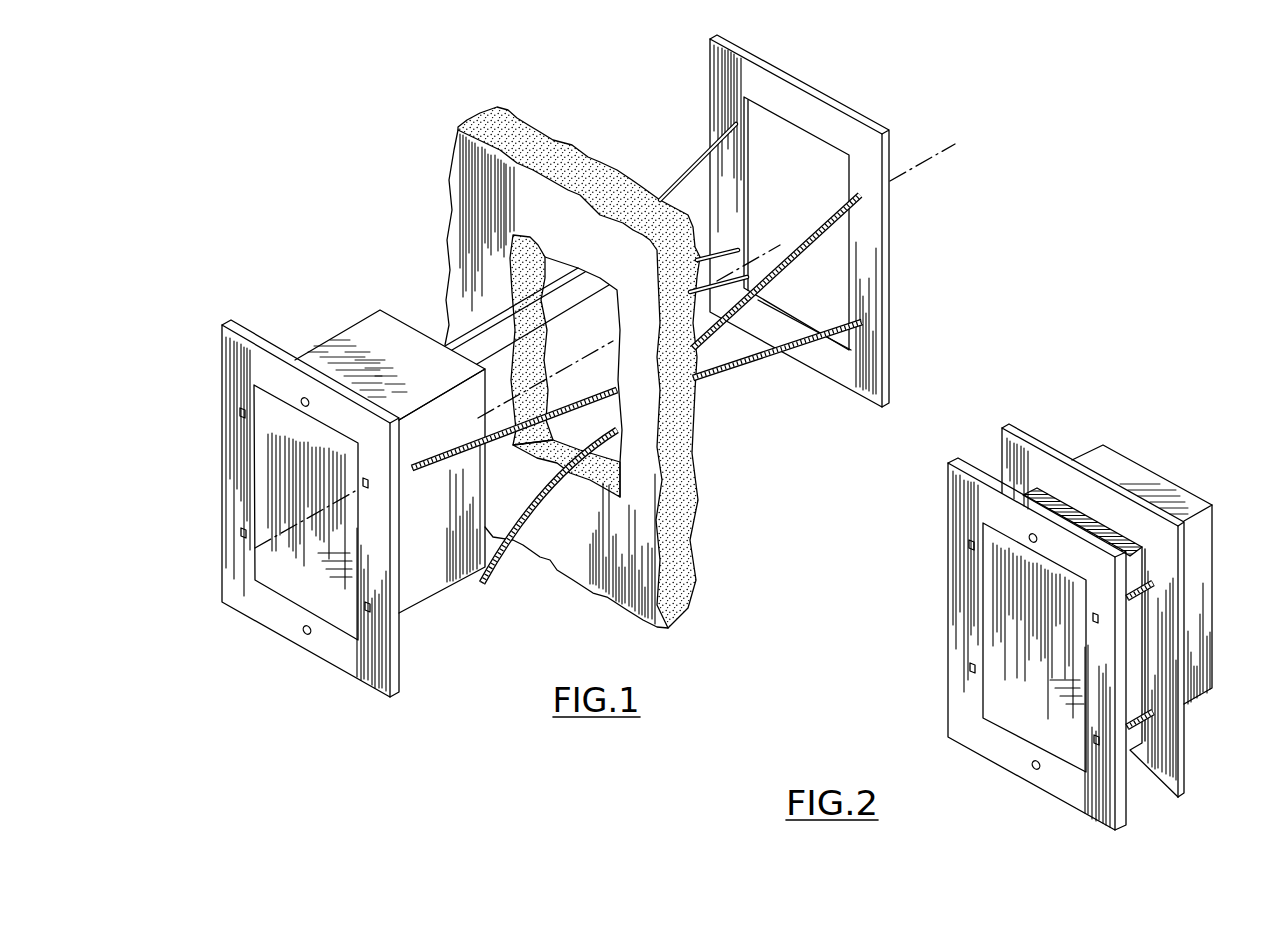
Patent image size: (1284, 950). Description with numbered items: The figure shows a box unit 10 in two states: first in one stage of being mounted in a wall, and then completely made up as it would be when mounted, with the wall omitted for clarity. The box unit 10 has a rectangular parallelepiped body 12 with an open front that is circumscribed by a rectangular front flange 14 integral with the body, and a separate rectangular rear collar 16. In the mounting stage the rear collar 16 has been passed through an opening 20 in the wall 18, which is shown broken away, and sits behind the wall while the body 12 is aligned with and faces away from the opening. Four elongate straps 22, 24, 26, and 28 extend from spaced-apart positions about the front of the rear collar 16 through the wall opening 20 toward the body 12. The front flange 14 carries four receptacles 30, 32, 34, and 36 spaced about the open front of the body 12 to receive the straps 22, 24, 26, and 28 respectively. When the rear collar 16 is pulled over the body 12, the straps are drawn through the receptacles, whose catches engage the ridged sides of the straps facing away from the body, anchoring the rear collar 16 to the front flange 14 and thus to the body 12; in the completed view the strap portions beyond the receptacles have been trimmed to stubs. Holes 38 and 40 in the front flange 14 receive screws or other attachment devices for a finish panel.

In FIG. 1, the box unit 10 is at (321, 280).
In FIG. 2, the box unit 10 is at (1091, 412).
In FIG. 1, the box unit body 12 is at (417, 582).
In FIG. 2, the box unit body 12 is at (1208, 680).
In FIG. 1, the front flange 14 is at (333, 648).
In FIG. 2, the front flange 14 is at (1063, 782).
In FIG. 1, the rear collar 16 is at (866, 393).
In FIG. 2, the rear collar 16 is at (1188, 777).
In FIG. 1, the wall 18 is at (579, 545).
In FIG. 1, the opening 20 is at (555, 445).
In FIG. 1, the strap 22 is at (697, 164).
In FIG. 1, the strap 24 is at (843, 208).
In FIG. 2, the strap 24 is at (1155, 582).
In FIG. 1, the strap 26 is at (733, 250).
In FIG. 1, the strap 28 is at (745, 363).
In FIG. 2, the strap 28 is at (1155, 712).
In FIG. 1, the receptacle 30 is at (239, 412).
In FIG. 2, the receptacle 30 is at (968, 545).
In FIG. 1, the receptacle 32 is at (362, 483).
In FIG. 2, the receptacle 32 is at (1092, 618).
In FIG. 1, the receptacle 34 is at (240, 534).
In FIG. 2, the receptacle 34 is at (970, 669).
In FIG. 1, the receptacle 36 is at (364, 607).
In FIG. 2, the receptacle 36 is at (1093, 740).
In FIG. 1, the hole 38 is at (301, 402).
In FIG. 2, the hole 38 is at (1029, 538).
In FIG. 1, the hole 40 is at (304, 631).
In FIG. 2, the hole 40 is at (1032, 767).